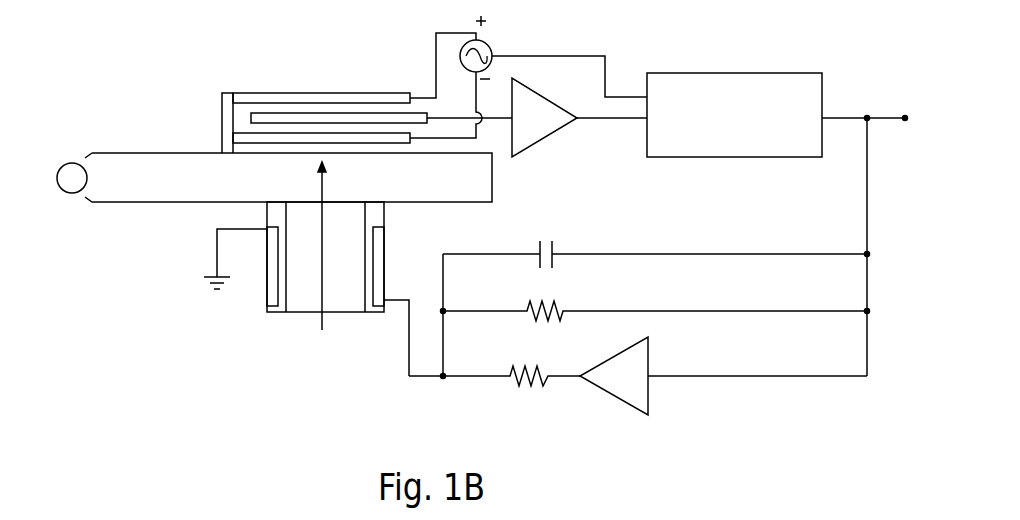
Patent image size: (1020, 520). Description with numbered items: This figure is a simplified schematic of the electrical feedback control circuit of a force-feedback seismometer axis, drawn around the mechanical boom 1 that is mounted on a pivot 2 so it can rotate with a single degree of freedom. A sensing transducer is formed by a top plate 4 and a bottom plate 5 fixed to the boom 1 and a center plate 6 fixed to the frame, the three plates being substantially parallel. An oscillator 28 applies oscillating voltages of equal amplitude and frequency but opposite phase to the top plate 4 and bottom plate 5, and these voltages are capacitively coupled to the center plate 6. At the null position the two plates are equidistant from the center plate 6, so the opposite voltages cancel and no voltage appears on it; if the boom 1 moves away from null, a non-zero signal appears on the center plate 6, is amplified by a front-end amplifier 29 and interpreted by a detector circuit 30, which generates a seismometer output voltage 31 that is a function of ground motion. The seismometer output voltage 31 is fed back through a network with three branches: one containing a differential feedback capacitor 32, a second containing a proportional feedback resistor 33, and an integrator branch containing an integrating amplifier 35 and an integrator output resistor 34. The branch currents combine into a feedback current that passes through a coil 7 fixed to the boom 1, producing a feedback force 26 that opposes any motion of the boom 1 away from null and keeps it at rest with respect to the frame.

The boom 1 is at (167, 160).
The pivot 2 is at (72, 193).
The top plate 4 is at (307, 98).
The bottom plate 5 is at (250, 118).
The center plate 6 is at (242, 137).
The coil 7 is at (271, 291).
The feedback force 26 is at (320, 193).
The oscillator 28 is at (493, 41).
The front-end amplifier 29 is at (534, 90).
The detector circuit 30 is at (787, 73).
The seismometer output voltage 31 is at (905, 115).
The differential feedback capacitor 32 is at (540, 262).
The proportional feedback resistor 33 is at (527, 318).
The integrator output resistor 34 is at (517, 382).
The integrating amplifier 35 is at (627, 403).